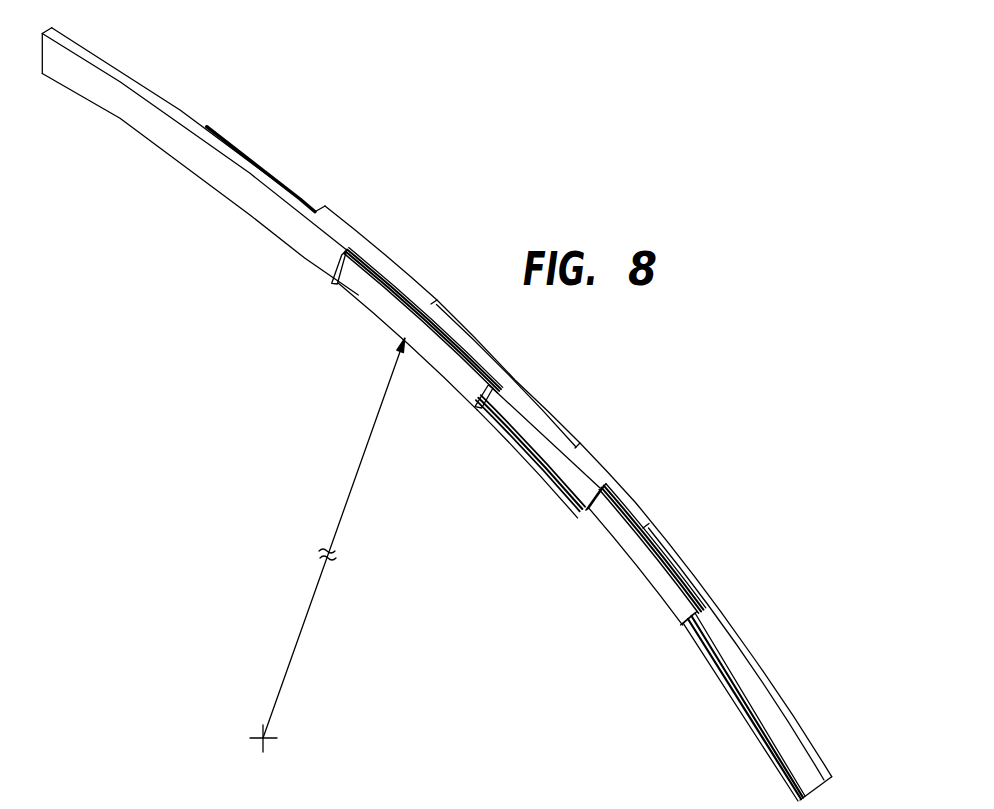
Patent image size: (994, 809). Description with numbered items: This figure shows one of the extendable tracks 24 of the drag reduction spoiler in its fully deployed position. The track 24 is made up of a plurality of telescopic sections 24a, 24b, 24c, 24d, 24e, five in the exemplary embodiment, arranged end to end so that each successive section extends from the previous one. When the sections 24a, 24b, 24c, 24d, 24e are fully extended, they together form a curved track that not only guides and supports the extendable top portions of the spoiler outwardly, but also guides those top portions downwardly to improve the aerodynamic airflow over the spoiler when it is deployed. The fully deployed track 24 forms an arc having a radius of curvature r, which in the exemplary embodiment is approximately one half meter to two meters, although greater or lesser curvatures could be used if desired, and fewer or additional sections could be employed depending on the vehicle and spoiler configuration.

The extendable track 24 is at (457, 191).
The telescopic section 24a is at (121, 100).
The telescopic section 24b is at (390, 312).
The telescopic section 24c is at (540, 453).
The telescopic section 24d is at (652, 572).
The telescopic section 24e is at (777, 730).
The radius of curvature r is at (348, 485).